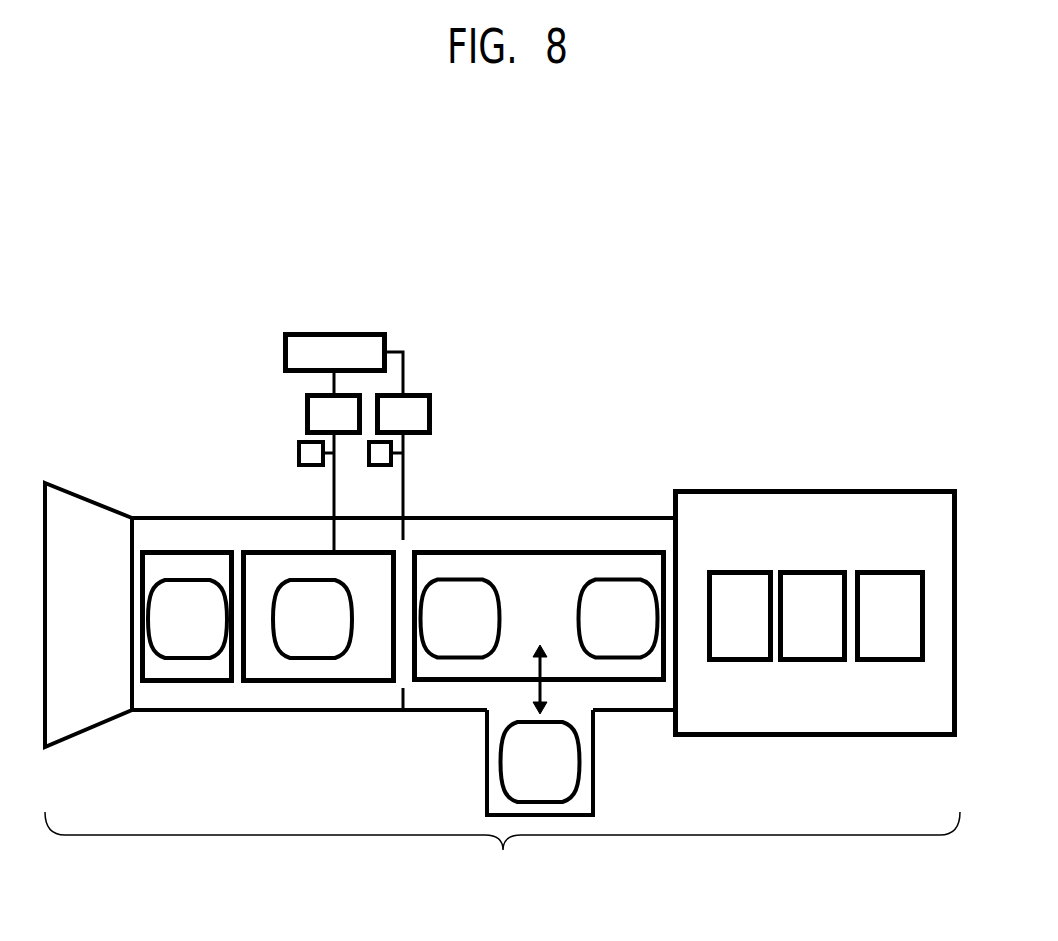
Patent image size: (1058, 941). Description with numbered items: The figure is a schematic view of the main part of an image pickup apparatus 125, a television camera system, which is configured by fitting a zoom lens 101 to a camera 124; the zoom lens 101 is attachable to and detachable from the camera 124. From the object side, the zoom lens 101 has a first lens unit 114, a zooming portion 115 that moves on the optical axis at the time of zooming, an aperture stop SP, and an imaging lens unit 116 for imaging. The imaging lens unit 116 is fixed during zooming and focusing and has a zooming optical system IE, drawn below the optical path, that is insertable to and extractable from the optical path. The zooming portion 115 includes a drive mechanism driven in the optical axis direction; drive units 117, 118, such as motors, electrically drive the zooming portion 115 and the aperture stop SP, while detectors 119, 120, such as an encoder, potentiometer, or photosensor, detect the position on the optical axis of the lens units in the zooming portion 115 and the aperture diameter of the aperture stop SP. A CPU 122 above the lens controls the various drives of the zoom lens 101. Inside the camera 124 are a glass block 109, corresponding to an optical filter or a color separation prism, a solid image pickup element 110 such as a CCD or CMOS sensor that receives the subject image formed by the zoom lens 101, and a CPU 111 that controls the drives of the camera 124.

The zoom lens 101 is at (462, 517).
The glass block 109 is at (740, 616).
The solid image pickup element 110 is at (813, 616).
The CPU 111 is at (890, 616).
The first lens unit 114 is at (193, 683).
The zooming portion 115 is at (323, 683).
The imaging lens unit 116 is at (542, 548).
The drive unit 117 is at (334, 474).
The drive unit 118 is at (404, 457).
The detector 119 is at (308, 469).
The detector 120 is at (378, 468).
The CPU 122 is at (345, 364).
The camera 124 is at (812, 488).
The image pickup apparatus 125 is at (502, 848).
The zooming optical system IE is at (502, 768).
The aperture stop SP is at (400, 717).